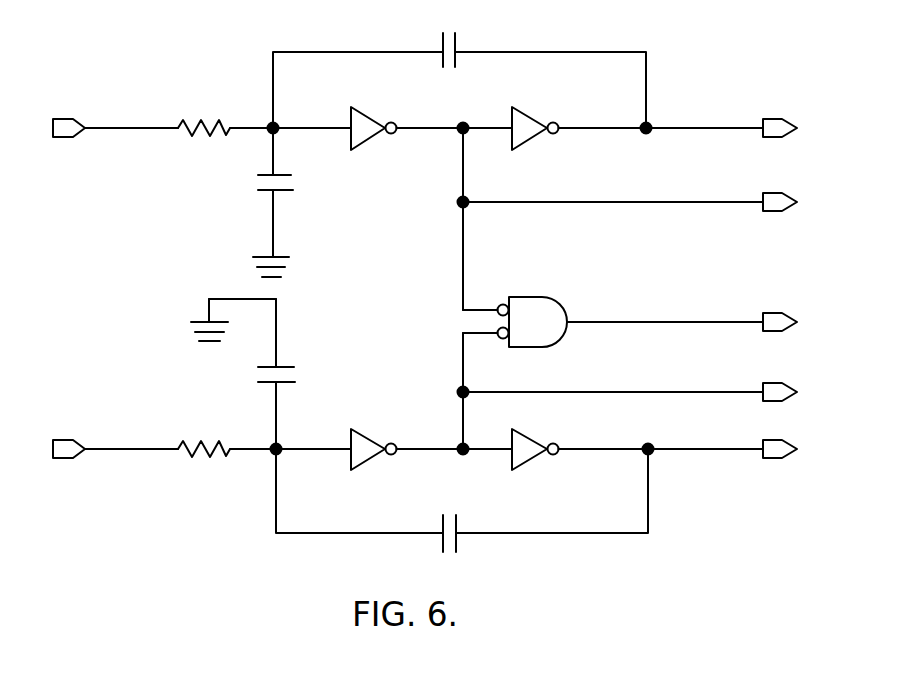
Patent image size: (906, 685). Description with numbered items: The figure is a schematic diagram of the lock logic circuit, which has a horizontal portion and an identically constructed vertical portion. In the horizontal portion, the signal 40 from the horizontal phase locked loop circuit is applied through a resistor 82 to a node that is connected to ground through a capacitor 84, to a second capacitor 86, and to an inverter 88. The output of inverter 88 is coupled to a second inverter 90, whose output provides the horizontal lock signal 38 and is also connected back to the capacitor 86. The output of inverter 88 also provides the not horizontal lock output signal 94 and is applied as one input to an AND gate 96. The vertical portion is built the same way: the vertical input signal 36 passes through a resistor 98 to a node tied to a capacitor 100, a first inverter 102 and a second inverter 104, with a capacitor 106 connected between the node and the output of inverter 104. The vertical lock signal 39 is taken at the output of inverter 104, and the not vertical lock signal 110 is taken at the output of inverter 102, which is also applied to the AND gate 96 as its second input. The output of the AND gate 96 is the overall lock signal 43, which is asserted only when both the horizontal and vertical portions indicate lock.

The vertical signal 36 is at (102, 449).
The horizontal lock signal 38 is at (690, 128).
The vertical lock signal 39 is at (682, 449).
The signal from horizontal phase locked loop circuit 40 is at (106, 128).
The lock signal 43 is at (683, 322).
The resistor 82 is at (215, 123).
The capacitor 84 is at (286, 186).
The second capacitor 86 is at (449, 70).
The inverter 88 is at (370, 116).
The second inverter 90 is at (533, 116).
The not horizontal lock output signal 94 is at (580, 202).
The AND gate 96 is at (534, 298).
The resistor 98 is at (199, 447).
The capacitor 100 is at (286, 381).
The inverter 102 is at (367, 440).
The inverter 104 is at (528, 435).
The capacitor 106 is at (462, 500).
The not vertical lock signal 110 is at (610, 392).